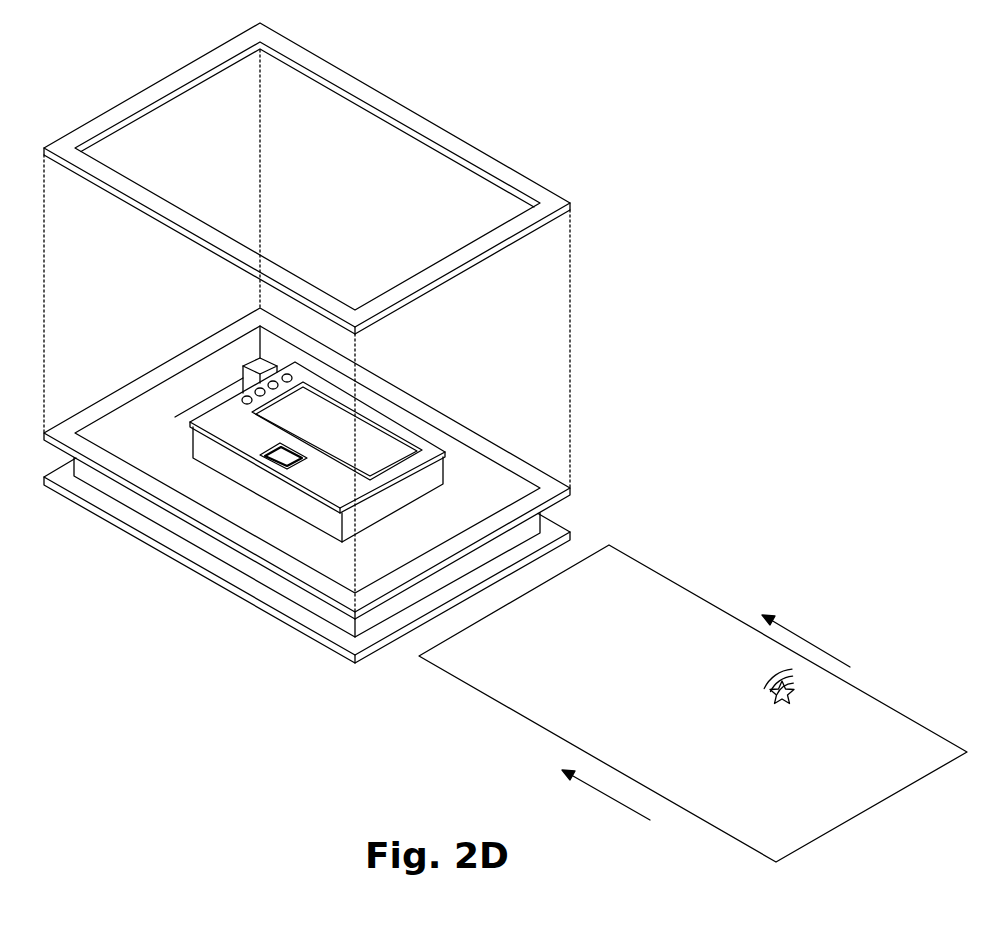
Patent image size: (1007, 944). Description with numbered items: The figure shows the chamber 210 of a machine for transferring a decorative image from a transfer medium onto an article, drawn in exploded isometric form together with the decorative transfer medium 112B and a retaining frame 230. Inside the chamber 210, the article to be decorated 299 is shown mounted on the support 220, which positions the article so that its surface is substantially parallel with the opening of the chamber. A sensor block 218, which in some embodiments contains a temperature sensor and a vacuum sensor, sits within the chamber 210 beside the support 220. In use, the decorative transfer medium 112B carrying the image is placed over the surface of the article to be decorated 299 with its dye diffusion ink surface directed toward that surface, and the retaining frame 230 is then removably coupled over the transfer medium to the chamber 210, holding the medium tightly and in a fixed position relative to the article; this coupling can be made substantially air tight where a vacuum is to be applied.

The retaining frame 230 is at (448, 128).
The chamber 210 is at (132, 390).
The sensor block 218 is at (263, 373).
The support 220 is at (372, 434).
The article to be decorated 299 is at (388, 418).
The decorative transfer medium 112B is at (652, 583).